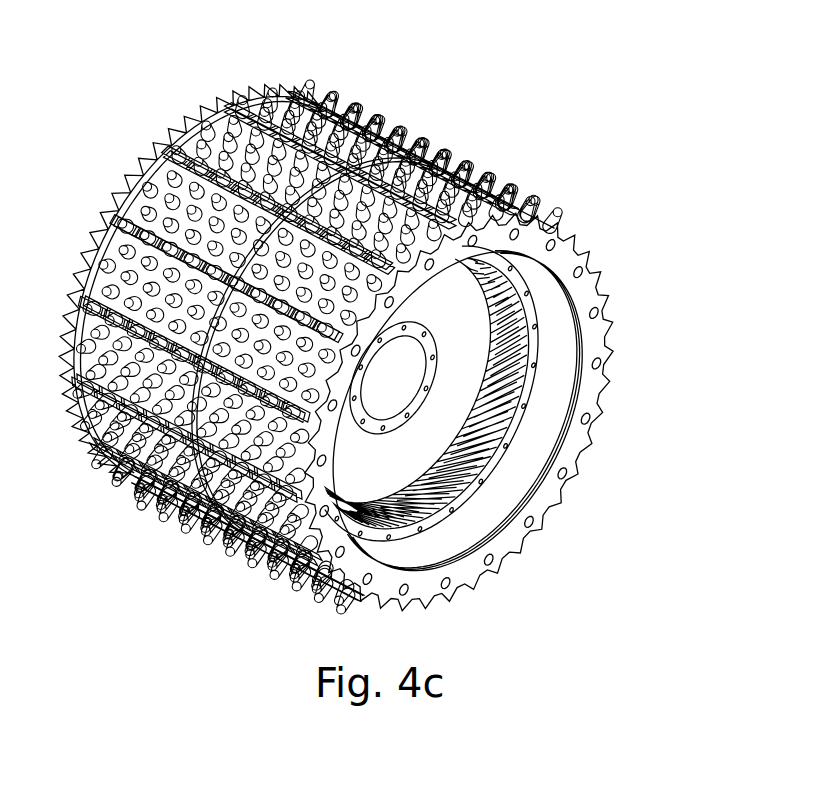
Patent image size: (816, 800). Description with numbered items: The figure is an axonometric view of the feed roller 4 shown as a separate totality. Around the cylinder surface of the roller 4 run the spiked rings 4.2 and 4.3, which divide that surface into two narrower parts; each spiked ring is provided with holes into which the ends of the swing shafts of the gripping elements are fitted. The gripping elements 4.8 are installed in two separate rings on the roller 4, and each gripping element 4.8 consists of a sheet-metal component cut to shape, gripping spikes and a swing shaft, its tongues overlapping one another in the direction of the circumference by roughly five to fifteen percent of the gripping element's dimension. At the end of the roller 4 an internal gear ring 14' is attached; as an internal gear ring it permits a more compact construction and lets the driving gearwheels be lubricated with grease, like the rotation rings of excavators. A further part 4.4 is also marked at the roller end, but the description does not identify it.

The feed roller 4 is at (369, 319).
The spiked ring 4.2 is at (395, 117).
The spiked ring 4.3 is at (213, 100).
The hub 4.4 is at (393, 377).
The gripping element 4.8 is at (137, 173).
The internal gear ring 14' is at (488, 417).